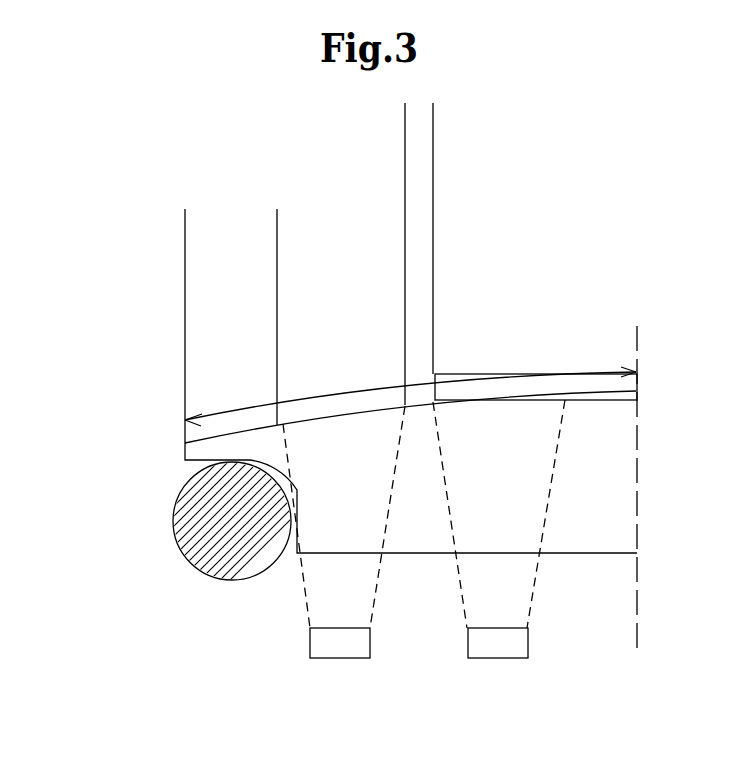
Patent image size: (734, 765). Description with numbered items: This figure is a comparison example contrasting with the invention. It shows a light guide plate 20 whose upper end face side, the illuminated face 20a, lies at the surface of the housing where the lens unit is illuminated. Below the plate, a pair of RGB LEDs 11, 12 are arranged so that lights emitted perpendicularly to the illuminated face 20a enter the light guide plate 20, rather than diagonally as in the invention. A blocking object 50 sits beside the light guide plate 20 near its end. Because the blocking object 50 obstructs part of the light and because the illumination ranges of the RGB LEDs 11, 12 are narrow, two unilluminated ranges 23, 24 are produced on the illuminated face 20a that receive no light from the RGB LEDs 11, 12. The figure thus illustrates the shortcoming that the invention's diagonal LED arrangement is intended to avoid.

The RGB LED 11 is at (336, 658).
The RGB LED 12 is at (497, 658).
The light guide plate 20 is at (580, 522).
The illuminated face 20a is at (517, 374).
The unilluminated range 23 is at (335, 231).
The unilluminated range 24 is at (492, 112).
The blocking object 50 is at (200, 572).